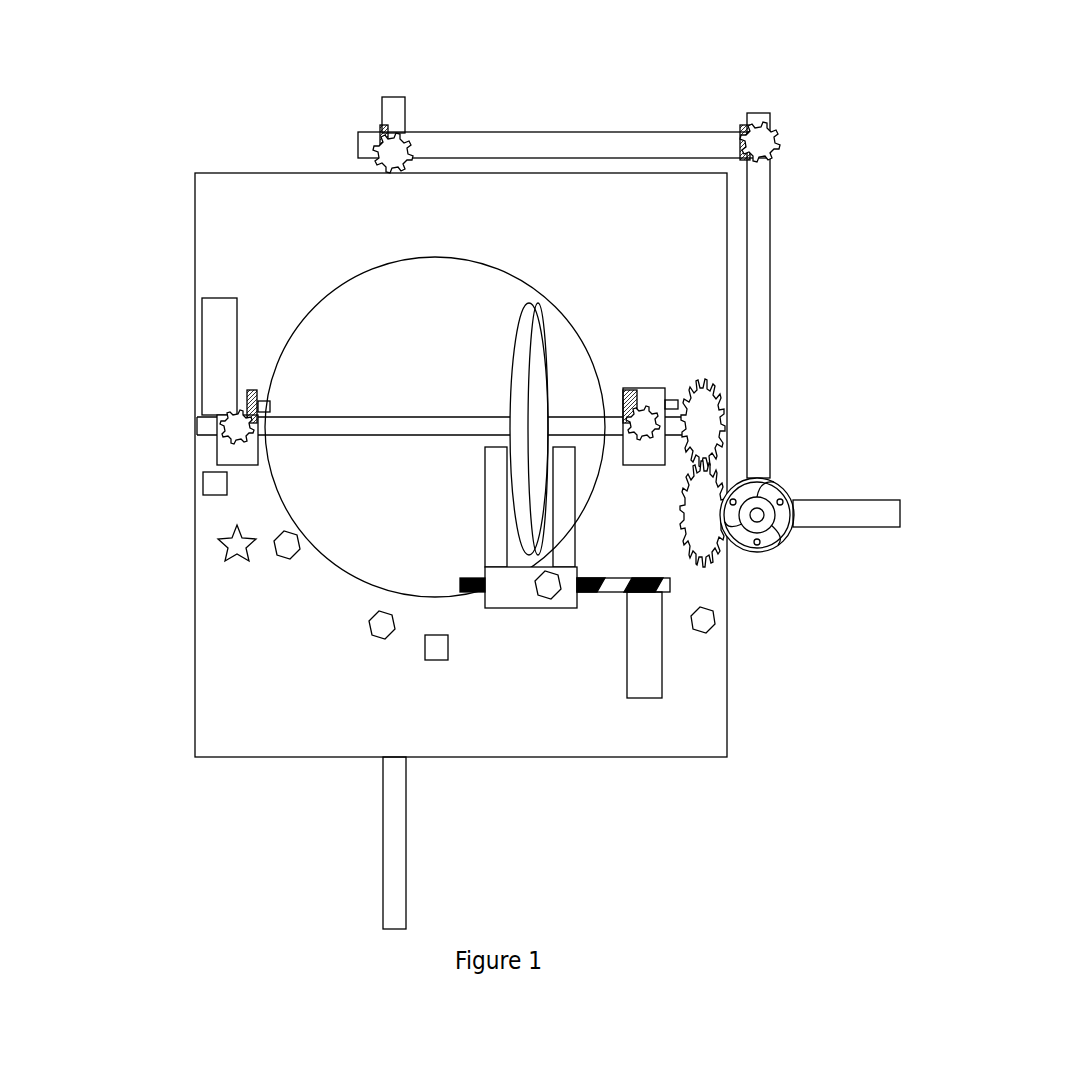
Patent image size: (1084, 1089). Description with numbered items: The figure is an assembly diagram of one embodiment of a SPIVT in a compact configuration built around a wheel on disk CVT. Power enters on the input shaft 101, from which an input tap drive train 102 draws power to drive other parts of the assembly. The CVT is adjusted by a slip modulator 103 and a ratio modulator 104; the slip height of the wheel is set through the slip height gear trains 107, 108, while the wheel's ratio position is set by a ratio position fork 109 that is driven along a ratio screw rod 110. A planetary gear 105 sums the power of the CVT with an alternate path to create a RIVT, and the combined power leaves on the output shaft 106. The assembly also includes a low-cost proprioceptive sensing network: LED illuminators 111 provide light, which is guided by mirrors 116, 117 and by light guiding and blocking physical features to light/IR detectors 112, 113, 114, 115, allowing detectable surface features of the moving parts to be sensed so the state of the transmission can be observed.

The input shaft 101 is at (413, 868).
The input tap drive train 102 is at (775, 175).
The slip modulator 103 is at (662, 688).
The ratio modulator 104 is at (333, 288).
The planetary gear 105 is at (790, 553).
The output shaft 106 is at (868, 490).
The slip height gear train 107 is at (662, 384).
The slip height gear train 108 is at (217, 426).
The ratio position fork 109 is at (513, 608).
The ratio screw rod 110 is at (672, 587).
The LED illuminators 111 is at (213, 553).
The light/IR detector 112 is at (278, 552).
The light/IR detector 113 is at (372, 633).
The light/IR detector 114 is at (555, 607).
The light/IR detector 115 is at (712, 630).
The mirror 116 is at (547, 378).
The mirror 117 is at (433, 667).